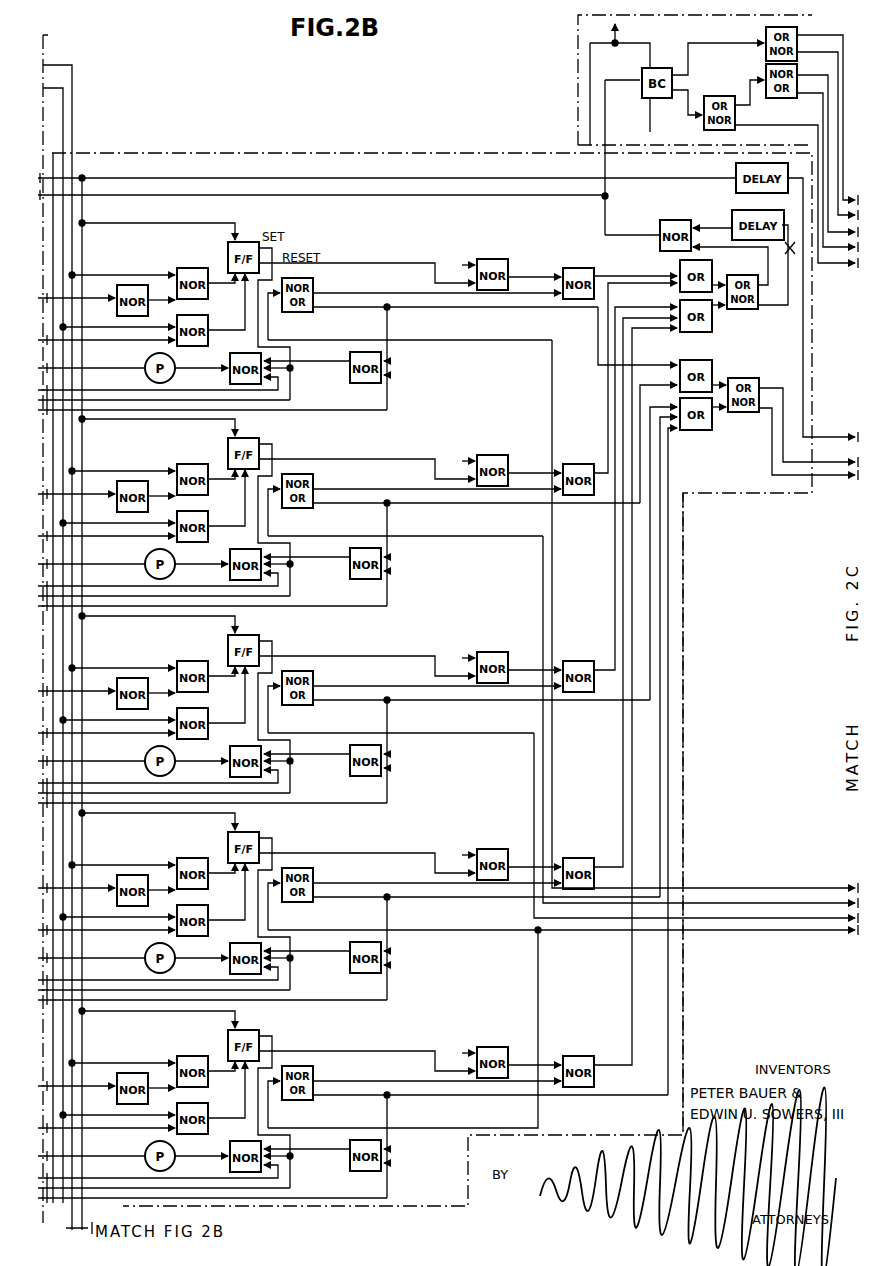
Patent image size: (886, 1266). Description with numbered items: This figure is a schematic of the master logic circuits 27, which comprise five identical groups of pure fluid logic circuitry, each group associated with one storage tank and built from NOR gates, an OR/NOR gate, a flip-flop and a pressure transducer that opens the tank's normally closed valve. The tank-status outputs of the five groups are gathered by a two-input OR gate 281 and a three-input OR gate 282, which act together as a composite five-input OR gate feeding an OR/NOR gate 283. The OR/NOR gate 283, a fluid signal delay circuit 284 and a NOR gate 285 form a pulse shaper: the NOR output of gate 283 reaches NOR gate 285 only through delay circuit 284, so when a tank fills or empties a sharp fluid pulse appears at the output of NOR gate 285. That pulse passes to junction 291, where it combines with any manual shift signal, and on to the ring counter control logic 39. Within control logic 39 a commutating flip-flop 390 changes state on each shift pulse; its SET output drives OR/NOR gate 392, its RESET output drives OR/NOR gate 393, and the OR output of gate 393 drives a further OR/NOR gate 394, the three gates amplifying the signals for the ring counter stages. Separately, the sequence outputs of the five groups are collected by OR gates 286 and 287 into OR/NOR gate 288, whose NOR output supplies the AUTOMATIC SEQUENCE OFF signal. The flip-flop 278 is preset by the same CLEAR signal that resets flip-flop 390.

The ring counter control logic unit 39 is at (680, 140).
The commutating flip-flop 390 is at (645, 98).
The OR/NOR gate 392 is at (765, 36).
The OR/NOR gate 393 is at (705, 128).
The OR/NOR gate 394 is at (783, 100).
The junction 291 is at (608, 197).
The NOR gate 285 is at (668, 221).
The fluid signal delay circuit 284 is at (740, 212).
The OR gate 281 is at (678, 268).
The OR gate 282 is at (708, 333).
The OR/NOR gate 283 is at (754, 311).
The OR gate 286 is at (686, 360).
The OR gate 287 is at (690, 431).
The OR/NOR gate 288 is at (746, 378).
The master logic circuits 27 is at (686, 787).
The flip-flop 278 is at (254, 241).